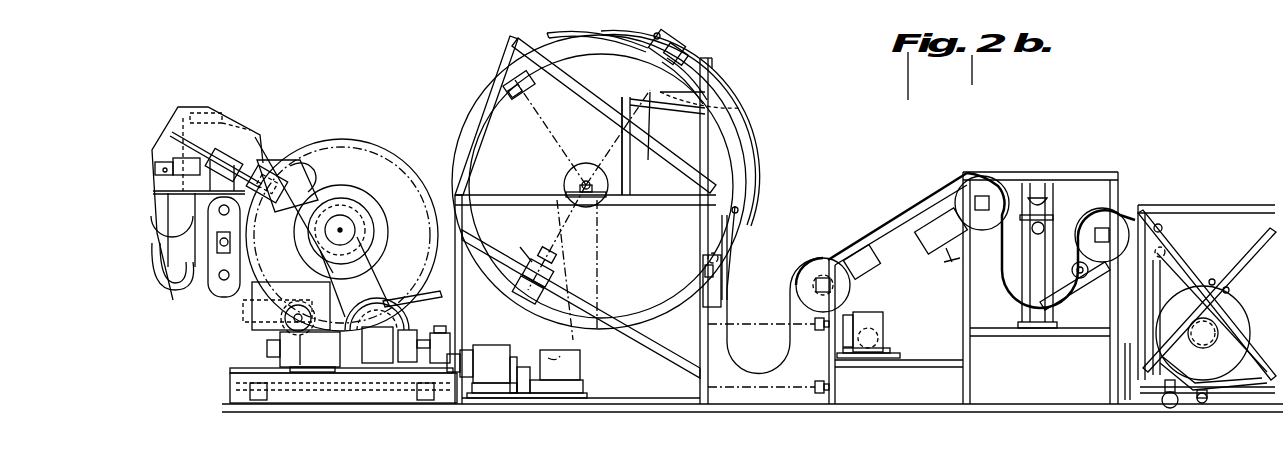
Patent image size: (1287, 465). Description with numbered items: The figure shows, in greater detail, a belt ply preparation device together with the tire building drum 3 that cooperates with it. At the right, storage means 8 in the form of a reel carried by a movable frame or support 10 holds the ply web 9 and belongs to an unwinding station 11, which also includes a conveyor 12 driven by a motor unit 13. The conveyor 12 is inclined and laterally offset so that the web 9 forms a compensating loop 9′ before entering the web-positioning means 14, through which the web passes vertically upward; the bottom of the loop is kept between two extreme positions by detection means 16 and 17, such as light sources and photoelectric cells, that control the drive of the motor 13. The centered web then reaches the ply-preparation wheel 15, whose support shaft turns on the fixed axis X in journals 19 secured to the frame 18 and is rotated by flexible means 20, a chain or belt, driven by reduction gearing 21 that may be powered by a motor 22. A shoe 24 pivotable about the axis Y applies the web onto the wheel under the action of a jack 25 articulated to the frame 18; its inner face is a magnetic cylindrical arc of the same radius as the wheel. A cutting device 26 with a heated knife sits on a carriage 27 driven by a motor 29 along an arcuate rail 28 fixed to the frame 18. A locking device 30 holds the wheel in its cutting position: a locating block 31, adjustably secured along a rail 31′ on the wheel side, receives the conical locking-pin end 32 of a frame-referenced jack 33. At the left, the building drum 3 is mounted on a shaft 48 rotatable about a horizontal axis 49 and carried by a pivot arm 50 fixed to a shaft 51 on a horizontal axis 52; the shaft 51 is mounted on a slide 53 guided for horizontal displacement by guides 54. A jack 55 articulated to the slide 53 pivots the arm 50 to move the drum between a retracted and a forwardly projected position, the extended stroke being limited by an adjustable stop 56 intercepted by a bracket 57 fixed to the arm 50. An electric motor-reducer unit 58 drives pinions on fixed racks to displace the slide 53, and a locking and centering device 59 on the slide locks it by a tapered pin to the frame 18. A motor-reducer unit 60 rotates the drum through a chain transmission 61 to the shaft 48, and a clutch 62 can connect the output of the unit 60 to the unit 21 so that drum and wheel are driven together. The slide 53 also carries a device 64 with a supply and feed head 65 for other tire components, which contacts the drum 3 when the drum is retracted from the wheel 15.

The building drum 3 is at (342, 150).
The storage means 8 is at (1213, 280).
The ply web 9 is at (1185, 268).
The compensating loop 9′ is at (762, 373).
The movable frame or support 10 is at (1232, 378).
The unwinding station 11 is at (933, 428).
The conveyor 12 is at (880, 234).
The motor unit 13 is at (870, 313).
The web-positioning means 14 is at (735, 260).
The ply-preparation wheel 15 is at (489, 76).
The detection means 16 is at (817, 332).
The detection means 17 is at (818, 395).
The frame 18 is at (462, 116).
The journals 19 is at (575, 185).
The flexible means 20 is at (610, 225).
The reduction gearing 21 is at (548, 348).
The motor 22 is at (540, 398).
The shoe 24 is at (745, 110).
The jack or actuator 25 is at (672, 118).
The cutting device 26 is at (672, 36).
The carriage or slide 27 is at (652, 30).
The arcuate guide or rail 28 is at (590, 34).
The drive motor 29 is at (684, 44).
The locking device 30 is at (520, 250).
The locating block 31 is at (514, 288).
The rail, flange or groove 31′ is at (668, 248).
The locking-pin end 32 is at (550, 260).
The jack or actuator 33 is at (540, 250).
The shaft 48 is at (360, 200).
The horizontal axis 49 is at (341, 229).
The pivot arm 50 is at (390, 210).
The shaft 51 is at (400, 362).
The horizontal axis 52 is at (372, 365).
The slide 53 is at (300, 372).
The guides 54 is at (258, 400).
The jack 55 is at (298, 243).
The adjustable stop 56 is at (460, 328).
The bracket 57 is at (440, 296).
The electric motor-reducer unit 58 is at (320, 372).
The locking and centering device 59 is at (436, 298).
The electric motor-reducer unit 60 is at (178, 291).
The chain transmission 61 is at (412, 226).
The clutch 62 is at (523, 371).
The supply device 64 is at (276, 98).
The supply and feed head 65 is at (280, 172).
The fixed axis X— X is at (594, 162).
The pivot axis Y— Y is at (740, 207).